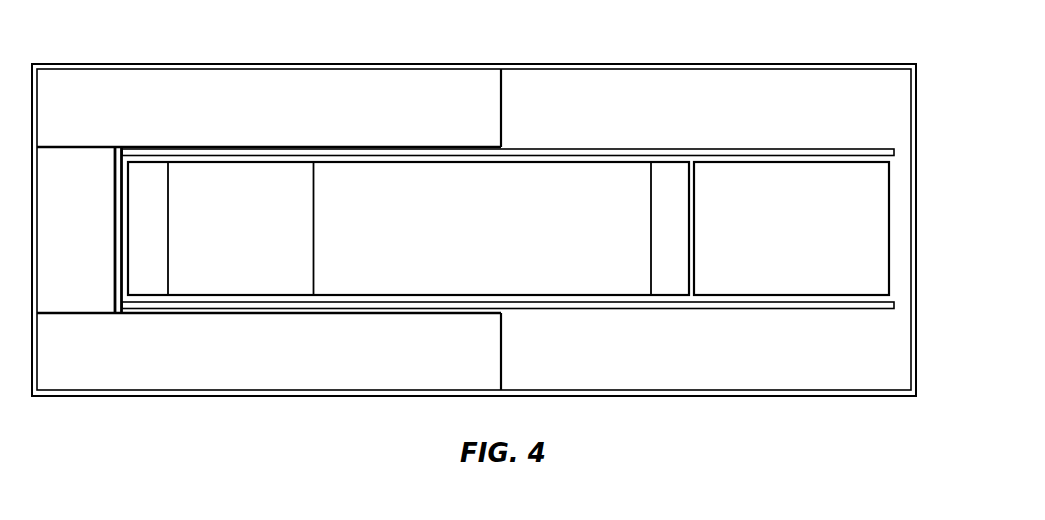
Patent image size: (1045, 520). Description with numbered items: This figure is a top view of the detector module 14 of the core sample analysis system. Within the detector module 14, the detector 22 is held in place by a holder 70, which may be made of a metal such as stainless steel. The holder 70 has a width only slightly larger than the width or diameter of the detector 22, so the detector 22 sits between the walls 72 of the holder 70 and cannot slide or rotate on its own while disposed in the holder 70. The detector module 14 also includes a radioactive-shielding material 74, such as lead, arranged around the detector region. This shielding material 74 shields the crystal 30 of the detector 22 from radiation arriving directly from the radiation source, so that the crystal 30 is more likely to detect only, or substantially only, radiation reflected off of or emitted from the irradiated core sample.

The detector module 14 is at (554, 32).
The detector 22 is at (898, 231).
The crystal 30 is at (254, 240).
The holder 70 is at (508, 226).
The walls 72 is at (623, 148).
The radioactive-shielding material 74 is at (257, 80).